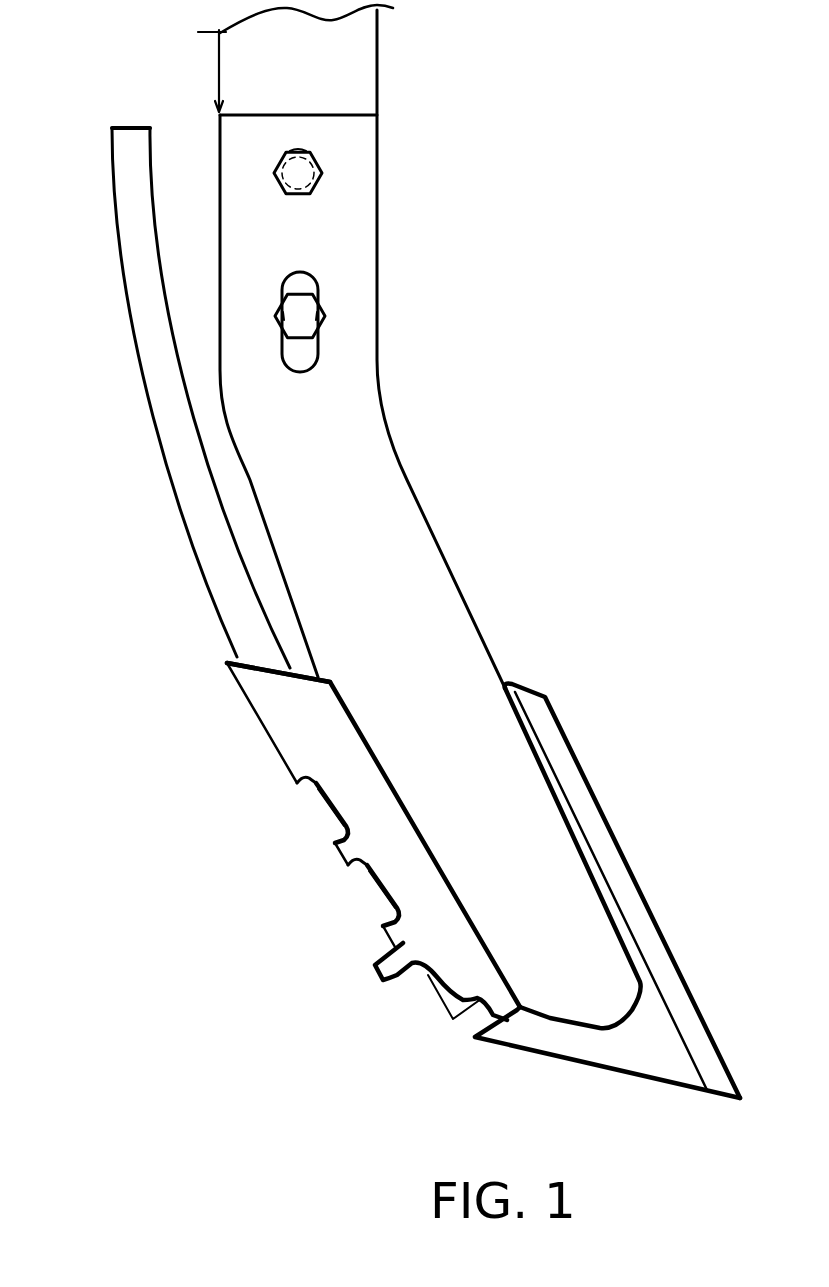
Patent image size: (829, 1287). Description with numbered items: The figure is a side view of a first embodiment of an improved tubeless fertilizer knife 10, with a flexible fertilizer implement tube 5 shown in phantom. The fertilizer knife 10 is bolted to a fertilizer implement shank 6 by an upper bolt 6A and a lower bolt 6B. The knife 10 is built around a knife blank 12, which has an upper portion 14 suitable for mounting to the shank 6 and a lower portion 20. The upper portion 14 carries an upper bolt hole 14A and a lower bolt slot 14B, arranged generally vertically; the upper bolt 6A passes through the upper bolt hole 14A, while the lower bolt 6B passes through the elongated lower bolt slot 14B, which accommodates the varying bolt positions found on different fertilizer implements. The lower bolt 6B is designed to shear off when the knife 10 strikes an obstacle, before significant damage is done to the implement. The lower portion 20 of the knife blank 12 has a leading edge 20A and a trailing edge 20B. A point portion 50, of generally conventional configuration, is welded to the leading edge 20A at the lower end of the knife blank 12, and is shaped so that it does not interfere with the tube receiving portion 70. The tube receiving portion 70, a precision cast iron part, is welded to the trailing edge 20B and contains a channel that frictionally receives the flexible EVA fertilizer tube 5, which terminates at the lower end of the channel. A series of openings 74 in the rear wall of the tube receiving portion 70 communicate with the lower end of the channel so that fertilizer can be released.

The fertilizer implement tube 5 is at (238, 615).
The fertilizer implement shank 6 is at (362, 68).
The upper bolt 6A is at (306, 152).
The lower bolt 6B is at (305, 290).
The fertilizer knife 10 is at (567, 280).
The knife blank 12 is at (360, 557).
The upper portion 14 is at (342, 249).
The upper bolt hole 14A is at (322, 178).
The lower bolt slot 14B is at (318, 340).
The lower portion 20 is at (575, 946).
The leading edge 20A is at (492, 675).
The trailing edge 20B is at (313, 673).
The point portion 50 is at (587, 807).
The tube receiving portion 70 is at (295, 737).
The openings 74 is at (310, 793).